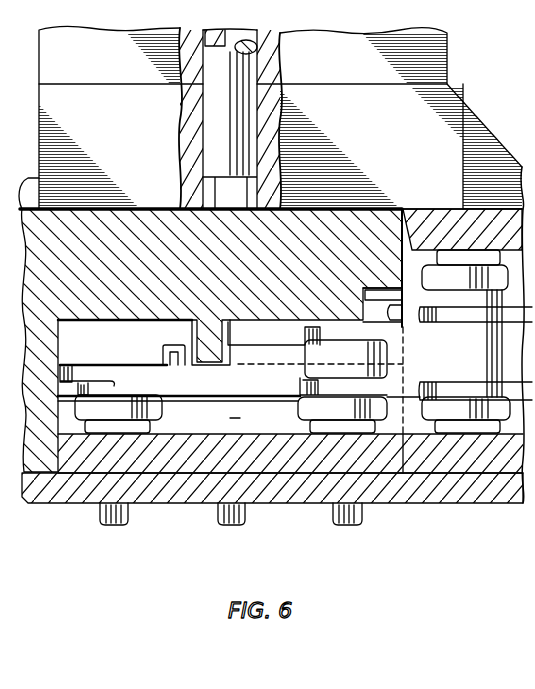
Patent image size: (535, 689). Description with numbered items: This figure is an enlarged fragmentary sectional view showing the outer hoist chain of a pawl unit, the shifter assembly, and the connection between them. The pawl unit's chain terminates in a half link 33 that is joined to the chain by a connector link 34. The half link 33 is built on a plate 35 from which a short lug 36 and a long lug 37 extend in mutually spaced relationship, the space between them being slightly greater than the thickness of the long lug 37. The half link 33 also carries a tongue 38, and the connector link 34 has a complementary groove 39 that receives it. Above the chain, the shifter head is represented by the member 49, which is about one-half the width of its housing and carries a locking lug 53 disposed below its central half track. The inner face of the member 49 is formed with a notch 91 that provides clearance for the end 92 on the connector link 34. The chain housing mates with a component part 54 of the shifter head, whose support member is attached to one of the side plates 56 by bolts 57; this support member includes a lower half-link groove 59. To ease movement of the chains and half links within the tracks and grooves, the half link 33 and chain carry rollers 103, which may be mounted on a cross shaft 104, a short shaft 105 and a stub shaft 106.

The half link 33 is at (248, 402).
The connector link 34 is at (459, 345).
The plate 35 is at (205, 385).
The short lug 36 is at (163, 353).
The long lug 37 is at (250, 332).
The tongue 38 is at (68, 367).
The groove 39 is at (398, 322).
The member 49 is at (118, 216).
The locking lug 53 is at (210, 343).
The component part 54 is at (115, 465).
The side plate 56 is at (24, 186).
The bolt 57 is at (115, 527).
The lower half-link groove 59 is at (233, 418).
The notch 91 is at (372, 297).
The end 92 is at (395, 288).
The roller 103 is at (455, 275).
The cross shaft 104 is at (475, 425).
The short shaft 105 is at (350, 425).
The stub shaft 106 is at (107, 428).